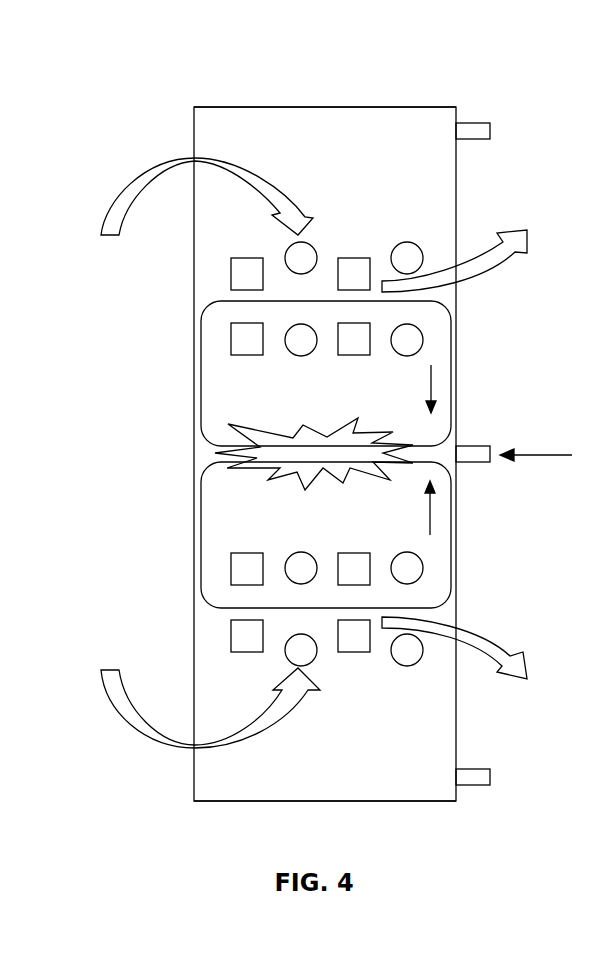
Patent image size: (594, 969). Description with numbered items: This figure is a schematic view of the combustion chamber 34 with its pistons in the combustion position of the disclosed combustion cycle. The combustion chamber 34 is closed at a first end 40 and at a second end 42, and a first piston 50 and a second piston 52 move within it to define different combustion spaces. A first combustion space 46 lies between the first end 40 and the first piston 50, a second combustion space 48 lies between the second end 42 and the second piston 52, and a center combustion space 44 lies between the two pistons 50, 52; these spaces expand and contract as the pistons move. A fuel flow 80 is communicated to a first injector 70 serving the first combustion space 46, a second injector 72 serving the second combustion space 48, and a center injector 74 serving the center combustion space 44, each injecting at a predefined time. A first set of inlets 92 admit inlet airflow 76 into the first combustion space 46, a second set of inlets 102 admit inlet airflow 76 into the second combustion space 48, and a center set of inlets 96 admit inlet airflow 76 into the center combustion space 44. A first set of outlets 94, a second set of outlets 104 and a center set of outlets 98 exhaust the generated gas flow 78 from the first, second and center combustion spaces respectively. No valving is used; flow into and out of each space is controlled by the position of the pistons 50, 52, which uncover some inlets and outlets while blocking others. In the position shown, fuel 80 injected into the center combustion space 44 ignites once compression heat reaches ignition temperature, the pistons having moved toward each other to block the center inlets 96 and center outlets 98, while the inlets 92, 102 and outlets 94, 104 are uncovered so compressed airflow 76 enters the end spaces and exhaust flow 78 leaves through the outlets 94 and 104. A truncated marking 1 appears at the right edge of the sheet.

The combustion chamber 34 is at (420, 830).
The first end 40 is at (242, 107).
The second end 42 is at (241, 803).
The center combustion space 44 is at (208, 456).
The first combustion space 46 is at (317, 148).
The second combustion space 48 is at (317, 794).
The first piston 50 is at (317, 410).
The second piston 52 is at (317, 522).
The first injector 70 is at (477, 123).
The second injector 72 is at (470, 786).
The center injector 74 is at (477, 446).
The inlet airflow 76 is at (118, 196).
The exhaust gas flow 78 is at (505, 268).
The fuel flow 80 is at (540, 458).
The first set of inlets 92 is at (395, 245).
The first set of outlets 94 is at (382, 287).
The center set of inlets 96 is at (427, 343).
The center set of outlets 98 is at (453, 318).
The second set of inlets 102 is at (400, 667).
The second set of outlets 104 is at (370, 620).
The reference 1 is at (585, 655).